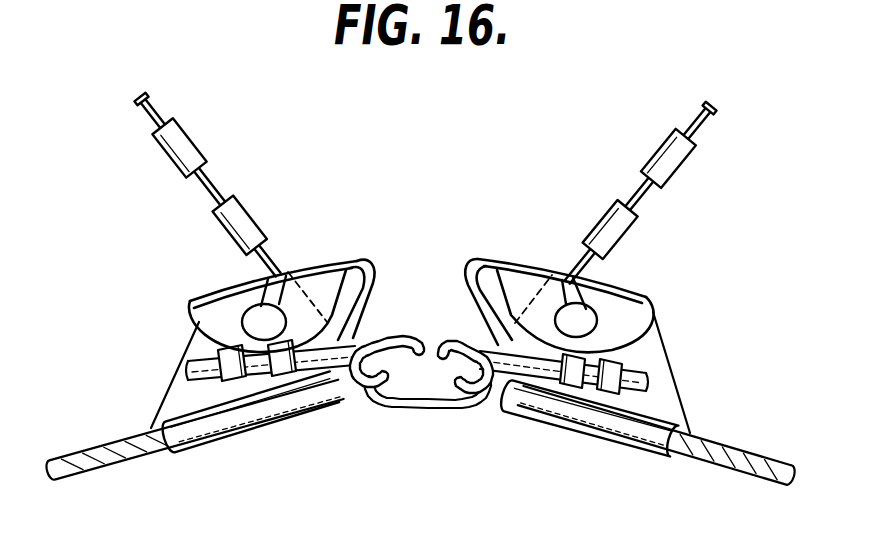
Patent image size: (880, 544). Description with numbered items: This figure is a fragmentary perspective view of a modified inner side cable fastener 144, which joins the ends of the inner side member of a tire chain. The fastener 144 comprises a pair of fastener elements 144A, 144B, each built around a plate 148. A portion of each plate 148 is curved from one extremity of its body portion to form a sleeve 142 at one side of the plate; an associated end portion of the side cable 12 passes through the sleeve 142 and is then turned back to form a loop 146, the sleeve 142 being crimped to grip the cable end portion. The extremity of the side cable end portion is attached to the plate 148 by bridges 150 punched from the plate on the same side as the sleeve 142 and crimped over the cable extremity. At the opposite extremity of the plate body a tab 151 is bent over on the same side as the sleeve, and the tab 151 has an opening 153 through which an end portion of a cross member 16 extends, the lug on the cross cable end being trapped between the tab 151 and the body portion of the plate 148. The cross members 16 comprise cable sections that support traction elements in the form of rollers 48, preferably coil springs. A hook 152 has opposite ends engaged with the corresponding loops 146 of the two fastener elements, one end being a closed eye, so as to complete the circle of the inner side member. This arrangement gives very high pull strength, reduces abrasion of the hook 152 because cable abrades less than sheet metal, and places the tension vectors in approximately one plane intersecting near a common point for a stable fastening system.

The side cable 12 is at (102, 463).
The cross member 16 is at (426, 168).
The roller 48 is at (246, 203).
The sleeve 142 is at (200, 442).
The fastener 144 is at (421, 214).
The fastener element 144A is at (163, 339).
The fastener element 144B is at (697, 352).
The loop 146 is at (357, 396).
The plate 148 is at (170, 405).
The bridges 150 is at (276, 374).
The tab 151 is at (189, 301).
The hook 152 is at (413, 410).
The opening 153 is at (238, 292).